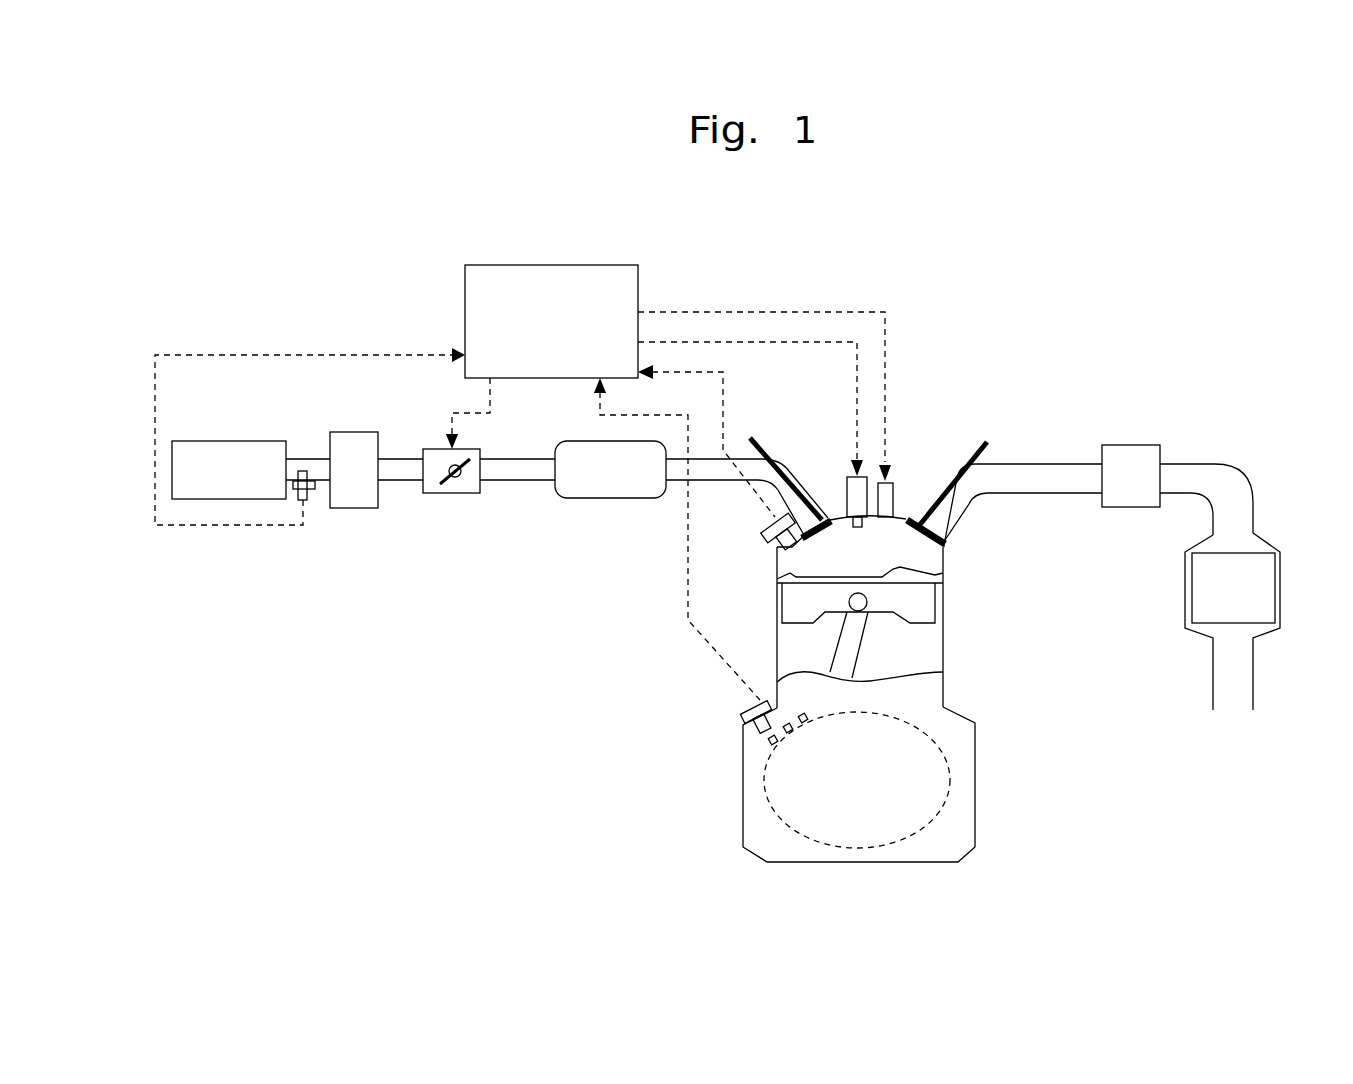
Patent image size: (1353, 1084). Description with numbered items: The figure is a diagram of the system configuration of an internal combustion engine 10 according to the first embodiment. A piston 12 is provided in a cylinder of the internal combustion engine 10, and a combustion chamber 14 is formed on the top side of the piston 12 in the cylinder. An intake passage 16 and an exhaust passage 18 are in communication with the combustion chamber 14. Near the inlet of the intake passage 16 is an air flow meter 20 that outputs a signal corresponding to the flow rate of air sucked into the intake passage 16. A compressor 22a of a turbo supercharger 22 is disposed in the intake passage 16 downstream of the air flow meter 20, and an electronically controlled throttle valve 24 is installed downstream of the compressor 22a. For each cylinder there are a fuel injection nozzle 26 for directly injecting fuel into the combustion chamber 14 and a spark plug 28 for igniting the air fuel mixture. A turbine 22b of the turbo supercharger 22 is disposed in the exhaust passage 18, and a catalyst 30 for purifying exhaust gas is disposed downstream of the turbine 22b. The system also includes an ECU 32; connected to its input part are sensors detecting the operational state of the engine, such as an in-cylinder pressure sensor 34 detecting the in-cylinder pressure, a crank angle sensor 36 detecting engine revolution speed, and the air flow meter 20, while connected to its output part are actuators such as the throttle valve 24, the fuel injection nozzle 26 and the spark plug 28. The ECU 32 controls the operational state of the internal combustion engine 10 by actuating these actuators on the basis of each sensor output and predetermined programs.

The internal combustion engine 10 is at (1010, 631).
The piston 12 is at (793, 606).
The combustion chamber 14 is at (797, 570).
The intake passage 16 is at (530, 472).
The exhaust passage 18 is at (1047, 483).
The air flow meter 20 is at (316, 490).
The turbo supercharger 22 is at (764, 439).
The compressor 22a is at (353, 445).
The turbine 22b is at (1137, 448).
The throttle valve 24 is at (437, 477).
The fuel injection nozzle 26 is at (890, 500).
The spark plug 28 is at (855, 503).
The catalyst 30 is at (1218, 593).
The ECU 32 is at (553, 265).
The in-cylinder pressure sensor 34 is at (765, 525).
The crank angle sensor 36 is at (745, 700).